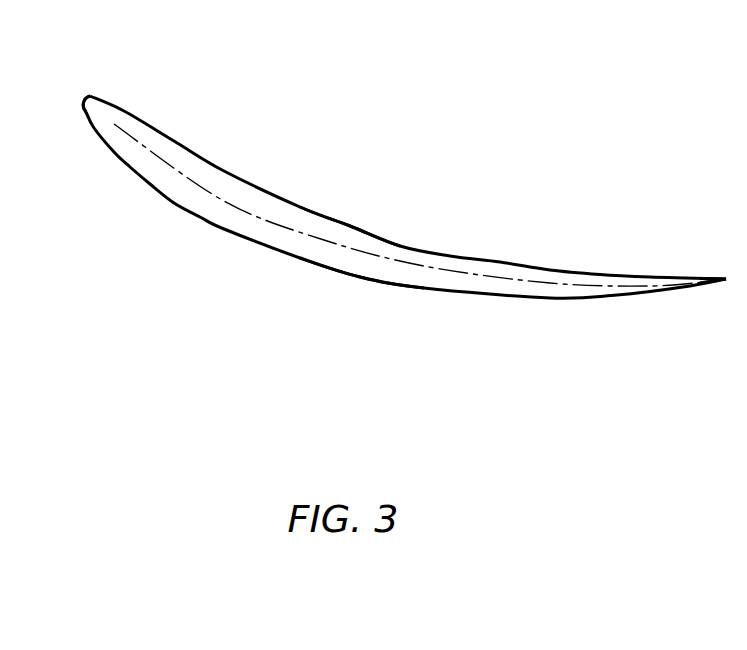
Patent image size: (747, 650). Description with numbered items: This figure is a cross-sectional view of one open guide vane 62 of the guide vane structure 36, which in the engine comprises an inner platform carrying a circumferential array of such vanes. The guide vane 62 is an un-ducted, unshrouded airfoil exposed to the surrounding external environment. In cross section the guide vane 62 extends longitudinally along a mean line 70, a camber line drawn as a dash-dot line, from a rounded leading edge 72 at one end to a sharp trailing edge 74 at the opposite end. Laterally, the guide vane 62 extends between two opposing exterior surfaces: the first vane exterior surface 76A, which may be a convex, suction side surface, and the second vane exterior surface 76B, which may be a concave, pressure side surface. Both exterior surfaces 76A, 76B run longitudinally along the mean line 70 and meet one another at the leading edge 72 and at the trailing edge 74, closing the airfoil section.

The guide vane structure 36 is at (385, 110).
The open guide vane 62 is at (264, 258).
The mean line 70 is at (227, 203).
The leading edge 72 is at (85, 97).
The trailing edge 74 is at (727, 279).
The first vane exterior surface 76A is at (385, 283).
The second vane exterior surface 76B is at (361, 229).